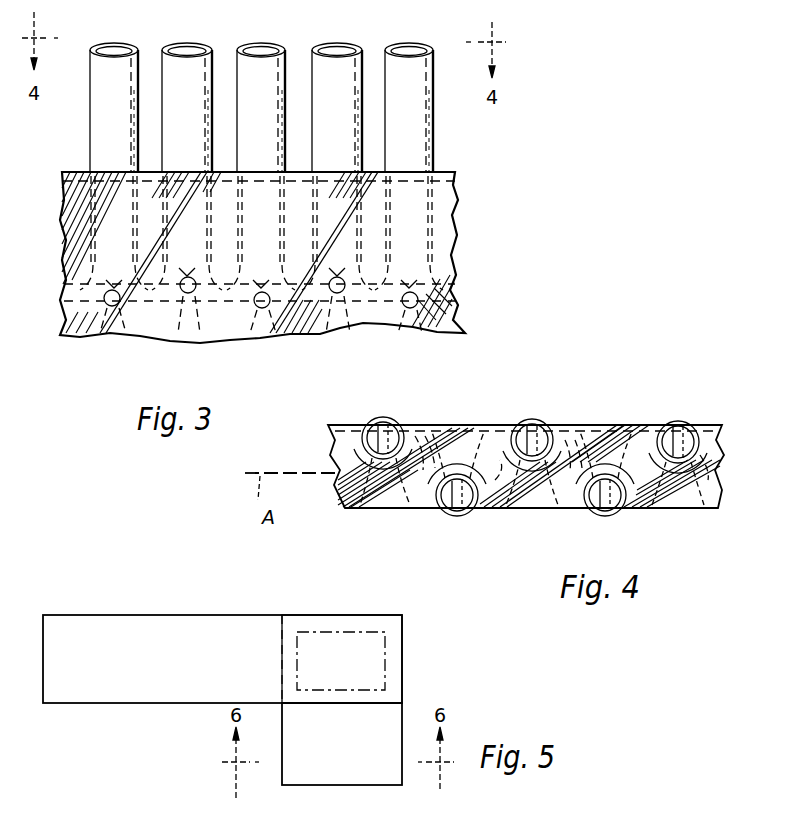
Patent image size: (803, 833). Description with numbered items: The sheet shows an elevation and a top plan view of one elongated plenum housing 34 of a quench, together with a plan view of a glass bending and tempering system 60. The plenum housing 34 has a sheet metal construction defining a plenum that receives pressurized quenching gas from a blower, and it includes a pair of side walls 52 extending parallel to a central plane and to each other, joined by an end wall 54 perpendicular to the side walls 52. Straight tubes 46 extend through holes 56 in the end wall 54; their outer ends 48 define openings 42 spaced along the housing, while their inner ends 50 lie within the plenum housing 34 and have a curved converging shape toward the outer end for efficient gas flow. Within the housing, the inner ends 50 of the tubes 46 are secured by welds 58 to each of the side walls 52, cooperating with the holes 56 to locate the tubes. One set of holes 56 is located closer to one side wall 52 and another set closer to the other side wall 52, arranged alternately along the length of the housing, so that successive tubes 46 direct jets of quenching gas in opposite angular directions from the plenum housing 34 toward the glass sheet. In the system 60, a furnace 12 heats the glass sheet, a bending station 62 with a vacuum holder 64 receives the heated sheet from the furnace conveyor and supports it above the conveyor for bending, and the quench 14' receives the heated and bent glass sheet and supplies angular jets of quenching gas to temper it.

In FIG. 5, the furnace 12 is at (192, 630).
In FIG. 5, the quench 14' is at (352, 763).
In FIG. 3, the plenum housing 34 is at (470, 188).
In FIG. 4, the plenum housing 34 is at (736, 406).
In FIG. 3, the openings 42 is at (122, 46).
In FIG. 4, the openings 42 is at (386, 418).
In FIG. 3, the straight tubes 46 is at (142, 114).
In FIG. 4, the straight tubes 46 is at (470, 470).
In FIG. 3, the outer ends 48 is at (140, 74).
In FIG. 4, the outer ends 48 is at (590, 492).
In FIG. 3, the inner ends 50 is at (96, 325).
In FIG. 4, the inner ends 50 is at (420, 436).
In FIG. 3, the side walls 52 is at (447, 217).
In FIG. 4, the side walls 52 is at (580, 436).
In FIG. 3, the end wall 54 is at (445, 172).
In FIG. 4, the end wall 54 is at (725, 440).
In FIG. 4, the holes 56 is at (455, 450).
In FIG. 3, the welds 58 is at (120, 303).
In FIG. 5, the glass bending and tempering system 60 is at (284, 612).
In FIG. 5, the bending station 62 is at (406, 640).
In FIG. 5, the vacuum holder 64 is at (386, 668).